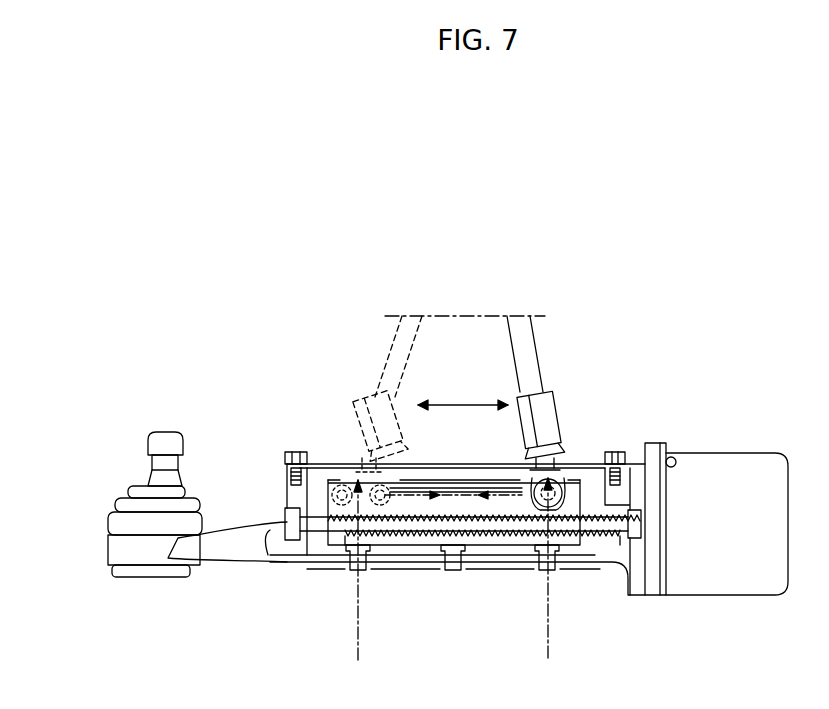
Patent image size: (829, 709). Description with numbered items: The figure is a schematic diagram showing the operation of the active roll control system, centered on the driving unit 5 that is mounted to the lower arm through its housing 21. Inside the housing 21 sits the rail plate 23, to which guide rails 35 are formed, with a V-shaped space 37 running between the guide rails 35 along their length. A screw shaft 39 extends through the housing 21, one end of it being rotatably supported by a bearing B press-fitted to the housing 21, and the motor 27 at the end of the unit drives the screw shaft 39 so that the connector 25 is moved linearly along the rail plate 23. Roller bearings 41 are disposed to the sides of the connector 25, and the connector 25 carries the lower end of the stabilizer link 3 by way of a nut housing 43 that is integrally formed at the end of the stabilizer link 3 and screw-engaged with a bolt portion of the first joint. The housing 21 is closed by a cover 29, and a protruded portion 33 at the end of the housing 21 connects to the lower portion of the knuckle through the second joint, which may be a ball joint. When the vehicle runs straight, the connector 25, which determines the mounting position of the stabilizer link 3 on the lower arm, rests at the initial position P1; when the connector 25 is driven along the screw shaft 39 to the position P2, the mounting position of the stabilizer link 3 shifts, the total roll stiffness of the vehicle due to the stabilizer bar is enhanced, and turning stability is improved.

The stabilizer link 3 is at (527, 360).
The nut housing 43 is at (548, 412).
The roller bearings 41 is at (520, 462).
The guide rails 35 is at (425, 486).
The cover 29 is at (320, 462).
The housing 21 is at (595, 565).
The bearing B is at (292, 542).
The screw shaft 39 is at (520, 566).
The rail plate 23 is at (495, 562).
The space 37 is at (400, 545).
The connector 25 is at (578, 560).
The driving unit 5 is at (450, 596).
The motor 27 is at (725, 470).
The protruded portion 33 is at (205, 578).
The initial position P1 is at (549, 588).
The position P2 is at (358, 589).